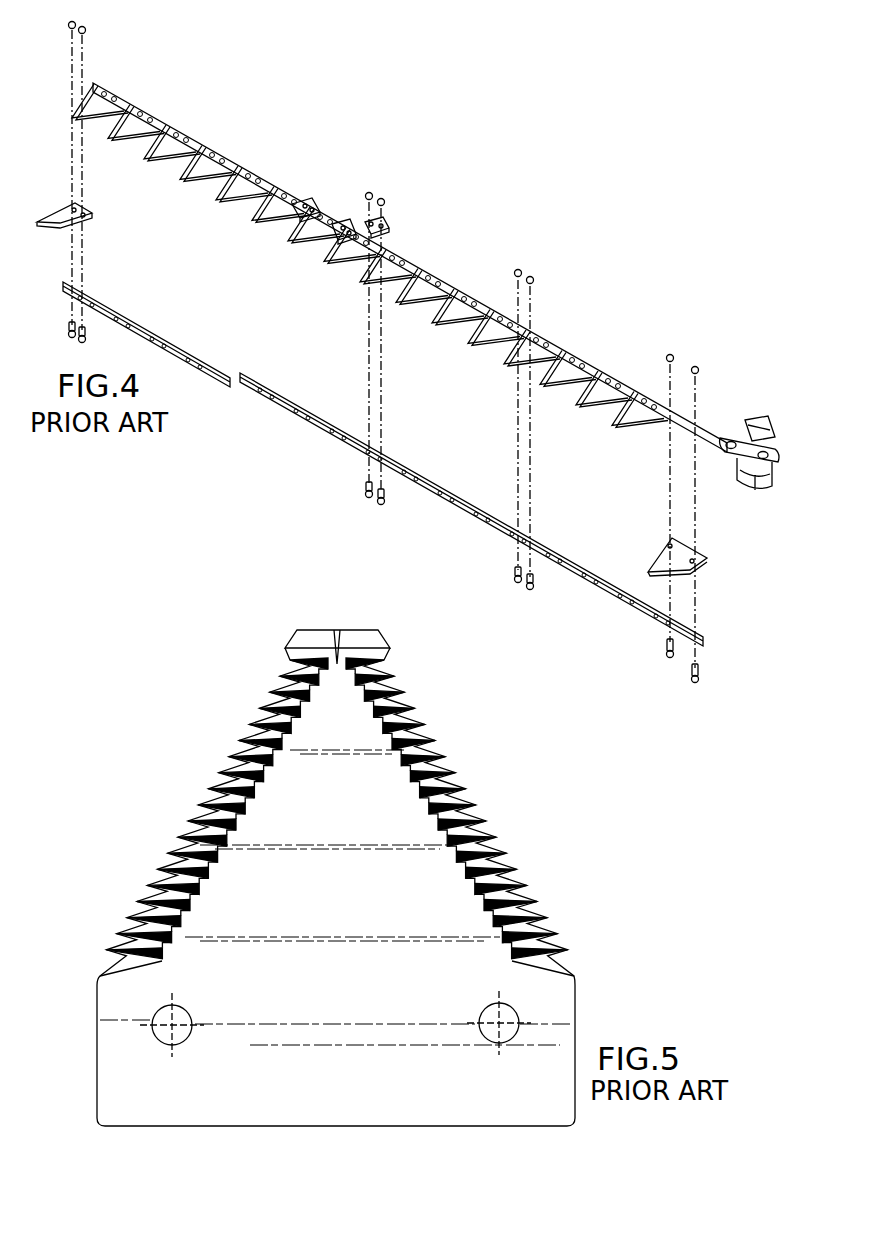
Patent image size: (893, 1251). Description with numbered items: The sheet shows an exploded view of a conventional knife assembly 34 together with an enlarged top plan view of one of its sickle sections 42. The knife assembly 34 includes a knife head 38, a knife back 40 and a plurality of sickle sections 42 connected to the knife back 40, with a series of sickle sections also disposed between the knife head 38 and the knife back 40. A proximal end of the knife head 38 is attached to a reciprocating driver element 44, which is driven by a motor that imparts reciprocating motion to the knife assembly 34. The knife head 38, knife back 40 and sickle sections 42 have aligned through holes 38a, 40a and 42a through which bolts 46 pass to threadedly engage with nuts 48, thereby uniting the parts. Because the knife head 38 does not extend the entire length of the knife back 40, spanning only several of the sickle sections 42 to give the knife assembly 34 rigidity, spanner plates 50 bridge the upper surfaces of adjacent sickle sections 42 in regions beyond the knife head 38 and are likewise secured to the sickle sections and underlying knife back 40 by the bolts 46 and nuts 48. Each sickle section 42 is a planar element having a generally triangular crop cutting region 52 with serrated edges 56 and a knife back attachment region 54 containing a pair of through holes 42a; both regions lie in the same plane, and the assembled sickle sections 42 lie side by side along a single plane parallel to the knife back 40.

In FIG. 4, the knife assembly 34 is at (543, 240).
In FIG. 4, the knife head 38 is at (577, 358).
In FIG. 4, the through holes 38a is at (543, 320).
In FIG. 4, the knife back 40 is at (468, 517).
In FIG. 4, the through holes 40a is at (527, 537).
In FIG. 4, the sickle section 42 is at (335, 252).
In FIG. 5, the sickle section 42 is at (525, 801).
In FIG. 5, the through holes 42a is at (182, 1010).
In FIG. 4, the reciprocating driver element 44 is at (777, 440).
In FIG. 4, the bolts 46 is at (379, 506).
In FIG. 4, the nuts 48 is at (384, 200).
In FIG. 4, the spanner plates 50 is at (389, 229).
In FIG. 5, the crop cutting region 52 is at (360, 792).
In FIG. 5, the knife back attachment region 54 is at (327, 1082).
In FIG. 5, the serrated edges 56 is at (180, 826).